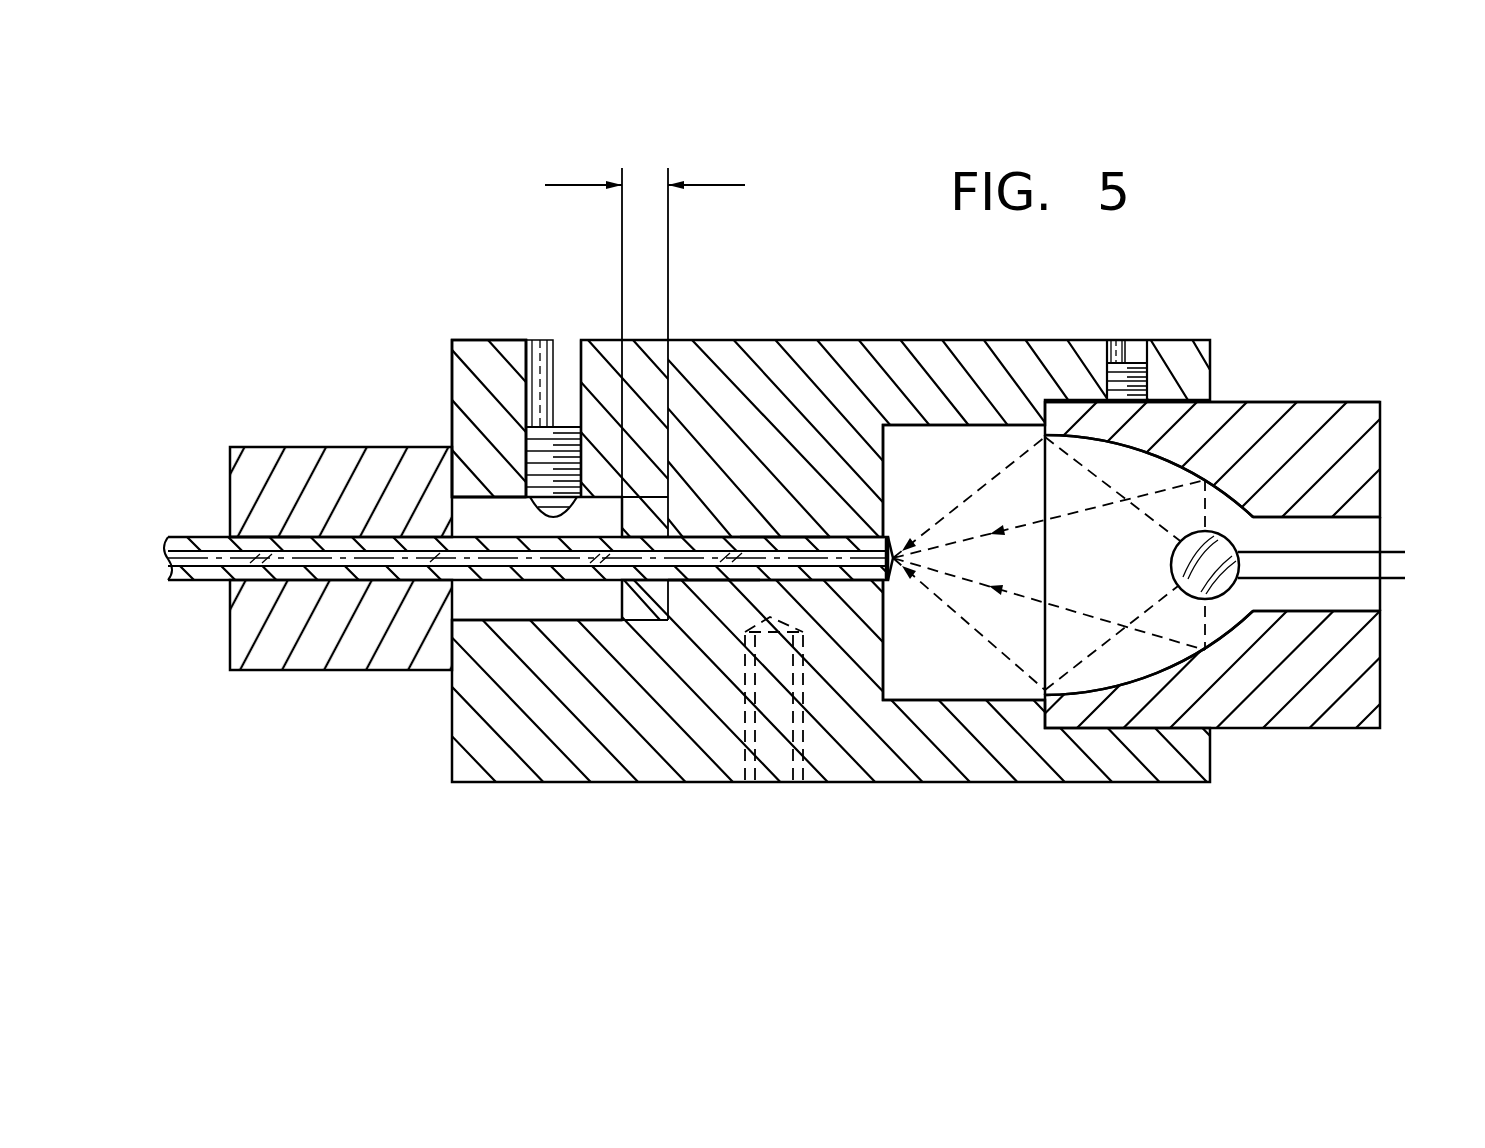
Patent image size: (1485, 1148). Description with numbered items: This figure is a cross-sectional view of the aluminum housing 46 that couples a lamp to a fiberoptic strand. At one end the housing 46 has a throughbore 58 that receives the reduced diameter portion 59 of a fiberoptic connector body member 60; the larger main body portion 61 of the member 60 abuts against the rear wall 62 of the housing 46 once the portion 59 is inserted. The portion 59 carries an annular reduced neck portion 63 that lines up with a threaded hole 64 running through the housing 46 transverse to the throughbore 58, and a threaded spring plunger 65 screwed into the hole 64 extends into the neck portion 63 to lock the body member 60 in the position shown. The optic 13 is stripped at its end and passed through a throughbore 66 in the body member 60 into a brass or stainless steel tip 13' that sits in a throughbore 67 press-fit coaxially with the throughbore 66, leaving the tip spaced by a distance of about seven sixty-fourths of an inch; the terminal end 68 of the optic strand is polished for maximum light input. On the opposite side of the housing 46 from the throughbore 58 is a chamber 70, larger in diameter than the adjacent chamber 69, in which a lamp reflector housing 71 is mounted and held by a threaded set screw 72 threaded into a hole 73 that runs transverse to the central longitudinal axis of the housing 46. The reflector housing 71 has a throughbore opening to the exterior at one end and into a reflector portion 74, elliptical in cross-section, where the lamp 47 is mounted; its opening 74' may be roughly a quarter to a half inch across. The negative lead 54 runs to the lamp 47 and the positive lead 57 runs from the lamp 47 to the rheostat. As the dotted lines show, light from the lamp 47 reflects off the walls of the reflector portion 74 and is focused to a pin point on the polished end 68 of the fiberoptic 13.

The optic 13 is at (533, 619).
The tip 13' is at (714, 704).
The housing 46 is at (742, 340).
The lamp 47 is at (1207, 570).
The negative lead 54 is at (1405, 578).
The positive lead 57 is at (1405, 552).
The throughbore 58 is at (478, 500).
The reduced diameter portion 59 is at (598, 602).
The fiberoptic connector body member 60 is at (385, 670).
The main body portion 61 is at (280, 632).
The rear wall 62 is at (452, 372).
The annular reduced neck portion 63 is at (552, 605).
The threaded hole 64 is at (578, 357).
The threaded spring plunger 65 is at (553, 340).
The throughbore 66 is at (258, 540).
The throughbore 67 is at (790, 545).
The terminal end 68 is at (935, 560).
The chamber 69 is at (905, 700).
The chamber 70 is at (1180, 405).
The lamp reflector housing 71 is at (1302, 388).
The threaded set screw 72 is at (1112, 340).
The threaded hole 73 is at (1140, 340).
The reflector portion 74 is at (1149, 565).
The opening 74' is at (1019, 487).